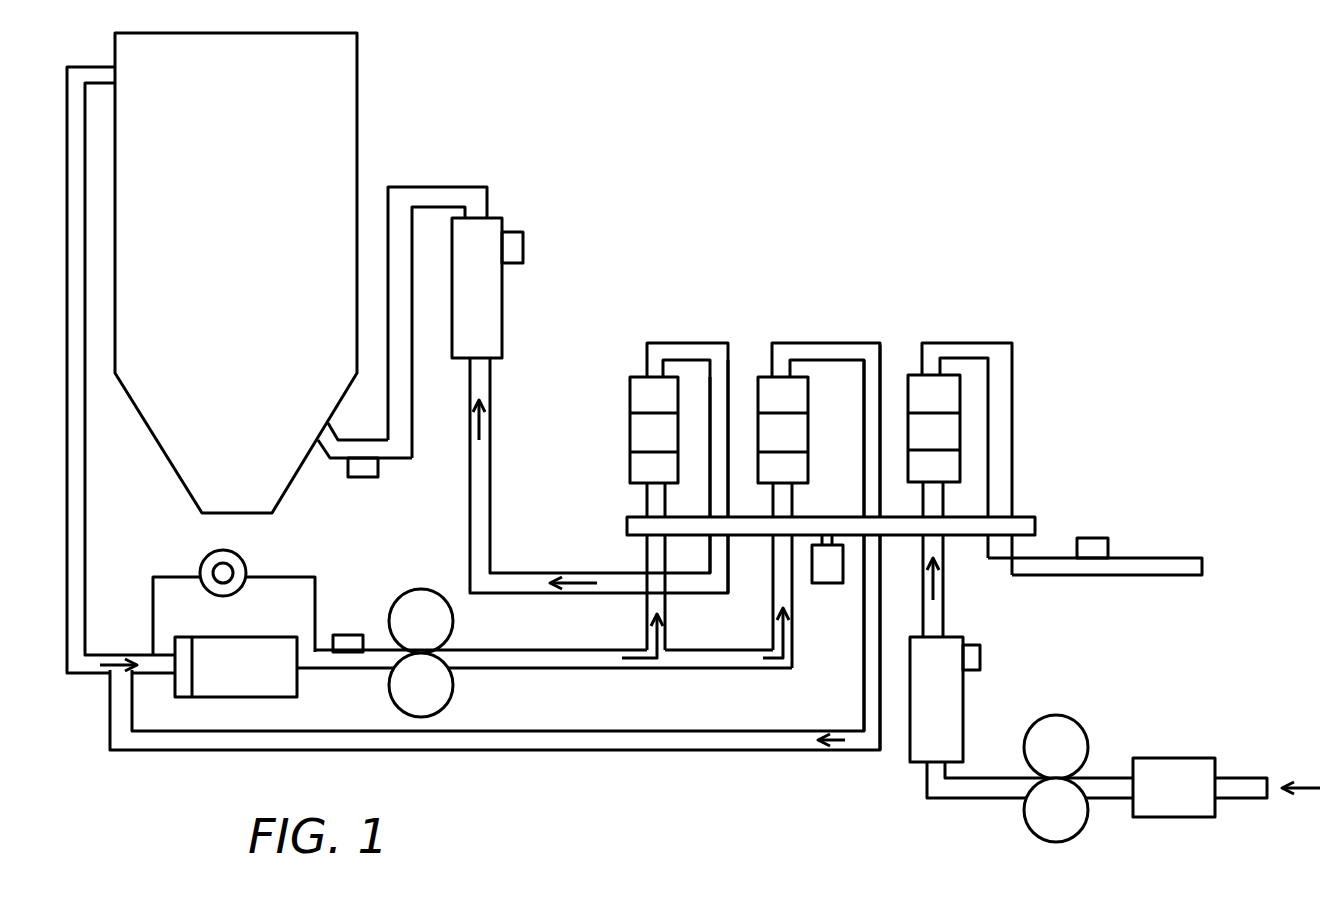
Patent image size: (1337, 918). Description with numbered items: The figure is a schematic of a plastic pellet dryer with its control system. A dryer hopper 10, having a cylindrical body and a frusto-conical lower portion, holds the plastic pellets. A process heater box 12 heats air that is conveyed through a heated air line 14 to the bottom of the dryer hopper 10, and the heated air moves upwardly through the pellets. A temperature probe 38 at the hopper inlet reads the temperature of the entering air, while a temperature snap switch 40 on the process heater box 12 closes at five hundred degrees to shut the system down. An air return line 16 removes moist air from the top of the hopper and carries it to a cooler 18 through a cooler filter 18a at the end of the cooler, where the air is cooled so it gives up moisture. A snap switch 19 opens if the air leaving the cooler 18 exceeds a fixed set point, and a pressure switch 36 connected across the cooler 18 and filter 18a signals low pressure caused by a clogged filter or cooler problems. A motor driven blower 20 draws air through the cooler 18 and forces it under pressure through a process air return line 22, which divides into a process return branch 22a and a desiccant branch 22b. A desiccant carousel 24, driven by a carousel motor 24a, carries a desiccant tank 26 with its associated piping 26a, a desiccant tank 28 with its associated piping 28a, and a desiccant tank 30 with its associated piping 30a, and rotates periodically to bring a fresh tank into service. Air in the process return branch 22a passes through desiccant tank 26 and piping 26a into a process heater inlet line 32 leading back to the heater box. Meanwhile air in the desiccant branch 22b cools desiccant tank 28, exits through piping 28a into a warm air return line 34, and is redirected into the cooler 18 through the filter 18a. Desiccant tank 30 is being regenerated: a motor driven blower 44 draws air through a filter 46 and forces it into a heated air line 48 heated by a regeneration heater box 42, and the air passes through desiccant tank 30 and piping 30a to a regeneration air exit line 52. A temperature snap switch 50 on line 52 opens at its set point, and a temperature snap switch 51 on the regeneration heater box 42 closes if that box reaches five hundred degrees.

The dryer hopper 10 is at (250, 188).
The process heater box 12 is at (482, 233).
The heated air line 14 is at (438, 196).
The air return line 16 is at (78, 468).
The cooler 18 is at (246, 640).
The cooler filter 18a is at (183, 643).
The snap switch 19 is at (346, 634).
The motor driven blower 20 is at (420, 602).
The process air return line 22 is at (483, 662).
The process return branch 22a is at (653, 607).
The desiccant branch 22b is at (783, 590).
The desiccant carousel 24 is at (1022, 520).
The carousel motor 24a is at (832, 585).
The desiccant tank 26 is at (637, 398).
The associated piping 26a is at (677, 347).
The desiccant tank 28 is at (768, 387).
The associated piping 28a is at (833, 347).
The desiccant tank 30 is at (912, 385).
The associated piping 30a is at (972, 348).
The process heater inlet line 32 is at (492, 470).
The warm air return line 34 is at (578, 738).
The pressure switch 36 is at (217, 552).
The temperature probe 38 is at (363, 477).
The temperature snap switch 40 is at (518, 243).
The regeneration heater box 42 is at (900, 747).
The motor driven blower 44 is at (1035, 812).
The filter 46 is at (1168, 803).
The heated air line 48 is at (935, 617).
The temperature snap switch 50 is at (1090, 545).
The temperature snap switch 51 is at (975, 657).
The regeneration air exit line 52 is at (1163, 565).